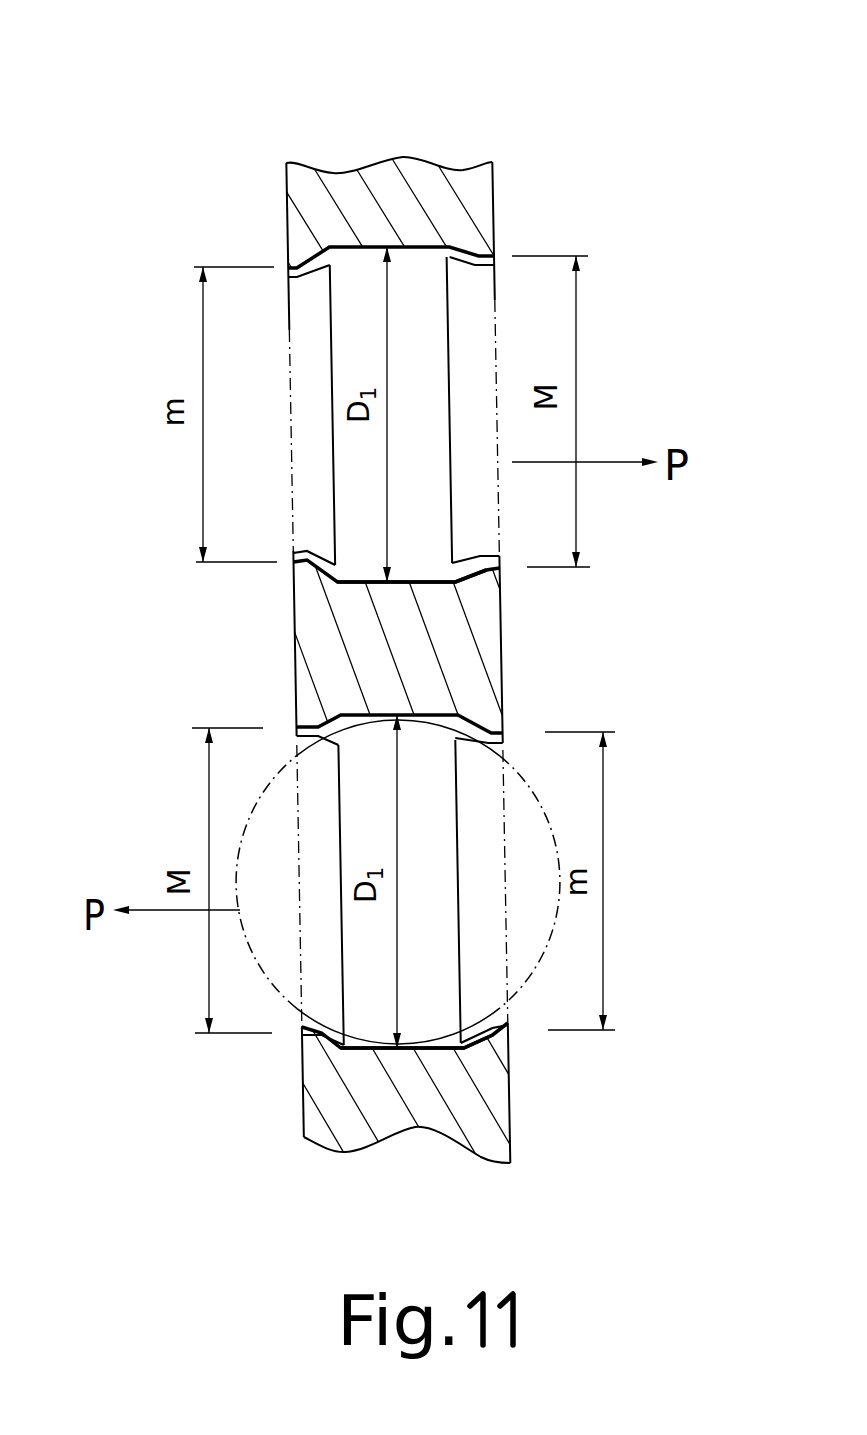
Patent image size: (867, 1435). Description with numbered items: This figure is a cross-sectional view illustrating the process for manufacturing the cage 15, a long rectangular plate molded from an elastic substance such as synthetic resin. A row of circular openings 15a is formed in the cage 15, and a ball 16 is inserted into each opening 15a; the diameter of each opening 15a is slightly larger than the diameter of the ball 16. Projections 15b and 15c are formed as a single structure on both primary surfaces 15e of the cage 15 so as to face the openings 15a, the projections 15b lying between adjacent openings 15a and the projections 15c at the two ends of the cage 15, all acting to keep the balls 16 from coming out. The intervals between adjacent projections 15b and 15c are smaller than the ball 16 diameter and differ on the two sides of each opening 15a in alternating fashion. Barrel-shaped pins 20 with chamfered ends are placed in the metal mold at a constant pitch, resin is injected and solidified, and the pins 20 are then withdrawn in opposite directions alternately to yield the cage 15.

The cage 15 is at (262, 122).
The circular opening 15a is at (408, 583).
The projection 15b is at (287, 208).
The projection 15c is at (325, 1105).
The primary surface 15e is at (287, 292).
The ball 16 is at (258, 803).
The pin 20 is at (305, 488).